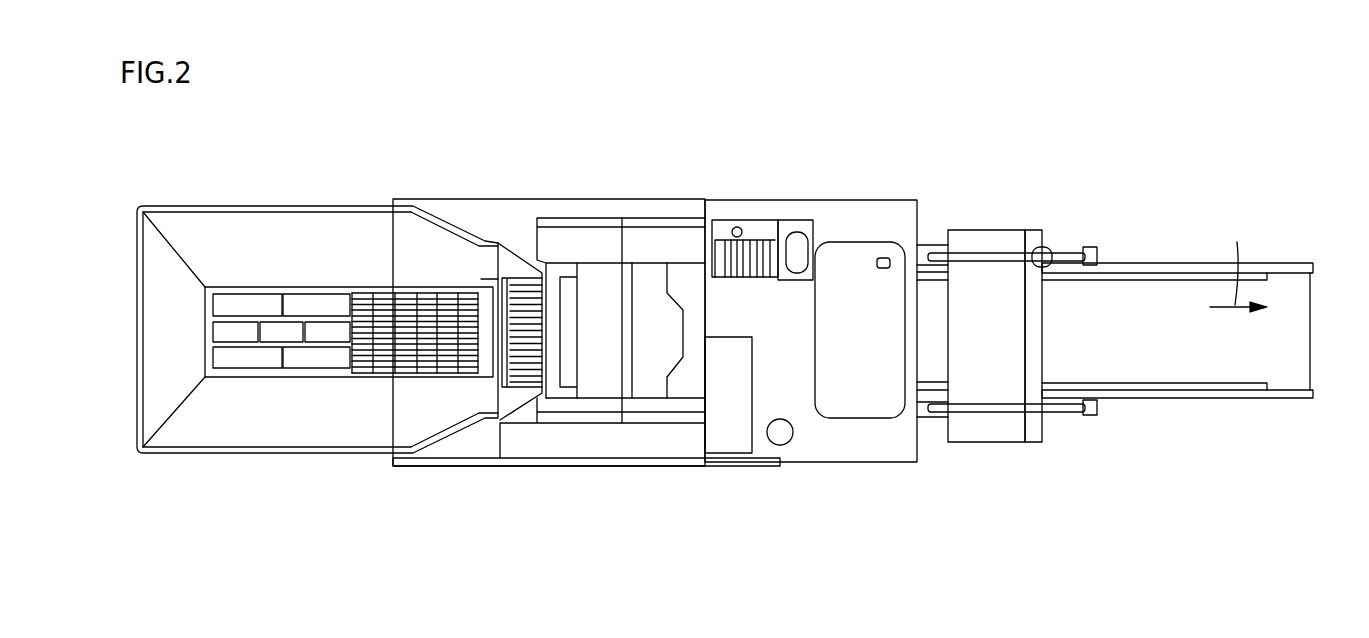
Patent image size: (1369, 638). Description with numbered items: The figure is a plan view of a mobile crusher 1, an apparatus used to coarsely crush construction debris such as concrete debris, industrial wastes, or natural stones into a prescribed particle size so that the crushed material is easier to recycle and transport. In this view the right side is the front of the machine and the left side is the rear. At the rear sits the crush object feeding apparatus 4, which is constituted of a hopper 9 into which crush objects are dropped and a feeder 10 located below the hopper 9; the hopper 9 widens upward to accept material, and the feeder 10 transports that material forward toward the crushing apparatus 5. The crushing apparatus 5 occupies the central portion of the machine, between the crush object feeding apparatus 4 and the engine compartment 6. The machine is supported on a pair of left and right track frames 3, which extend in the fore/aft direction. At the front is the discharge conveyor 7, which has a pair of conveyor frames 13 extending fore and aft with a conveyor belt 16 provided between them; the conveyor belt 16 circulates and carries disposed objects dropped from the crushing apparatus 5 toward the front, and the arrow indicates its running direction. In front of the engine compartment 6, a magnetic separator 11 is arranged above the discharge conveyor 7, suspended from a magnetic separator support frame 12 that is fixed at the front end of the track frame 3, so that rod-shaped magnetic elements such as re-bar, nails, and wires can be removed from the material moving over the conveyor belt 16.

The mobile crusher 1 is at (1122, 160).
The track frame 3 is at (1100, 409).
The crush object feeding apparatus 4 is at (283, 495).
The crushing apparatus 5 is at (525, 390).
The engine compartment 6 is at (872, 462).
The discharge conveyor 7 is at (1155, 262).
The hopper 9 is at (297, 432).
The feeder 10 is at (387, 372).
The magnetic separator 11 is at (979, 230).
The magnetic separator support frame 12 is at (992, 414).
The conveyor frame 13 is at (1238, 395).
The conveyor belt 16 is at (1184, 342).